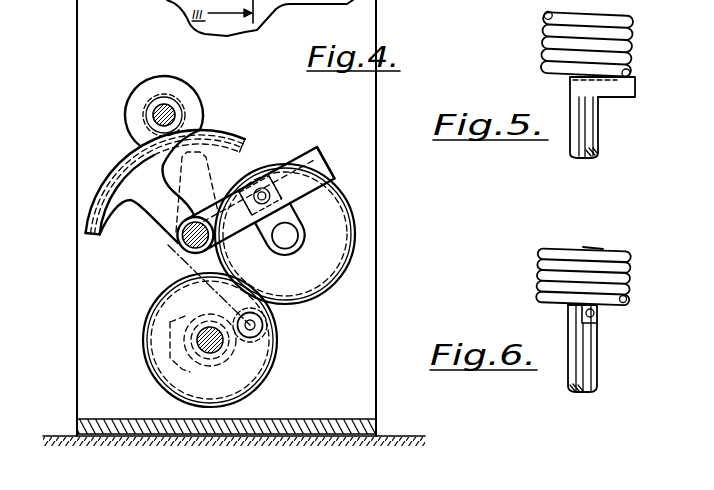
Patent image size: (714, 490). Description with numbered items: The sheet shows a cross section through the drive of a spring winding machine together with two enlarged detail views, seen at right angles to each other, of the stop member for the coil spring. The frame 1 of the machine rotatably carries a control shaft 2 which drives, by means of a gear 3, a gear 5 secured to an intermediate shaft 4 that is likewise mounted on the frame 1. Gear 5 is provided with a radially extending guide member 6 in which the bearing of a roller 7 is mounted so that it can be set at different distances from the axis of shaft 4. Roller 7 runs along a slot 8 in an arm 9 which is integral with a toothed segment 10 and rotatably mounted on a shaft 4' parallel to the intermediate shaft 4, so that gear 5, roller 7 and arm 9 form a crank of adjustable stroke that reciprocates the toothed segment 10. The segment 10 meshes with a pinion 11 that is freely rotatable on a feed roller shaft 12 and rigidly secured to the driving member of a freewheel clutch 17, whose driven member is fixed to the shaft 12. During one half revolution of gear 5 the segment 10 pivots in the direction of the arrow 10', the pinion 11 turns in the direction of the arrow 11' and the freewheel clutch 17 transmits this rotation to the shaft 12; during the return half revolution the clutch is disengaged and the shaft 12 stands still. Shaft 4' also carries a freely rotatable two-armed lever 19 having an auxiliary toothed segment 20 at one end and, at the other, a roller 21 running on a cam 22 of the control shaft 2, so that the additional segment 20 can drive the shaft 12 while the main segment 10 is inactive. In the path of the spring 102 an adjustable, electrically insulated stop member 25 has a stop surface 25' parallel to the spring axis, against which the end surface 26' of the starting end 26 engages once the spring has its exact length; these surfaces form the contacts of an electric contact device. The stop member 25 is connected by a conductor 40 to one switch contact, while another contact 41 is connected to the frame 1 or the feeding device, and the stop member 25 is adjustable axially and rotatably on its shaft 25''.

In FIG. 4, the frame 1 is at (82, 343).
In FIG. 4, the control shaft 2 is at (218, 349).
In FIG. 4, the gear 3 is at (267, 372).
In FIG. 4, the intermediate shaft 4 is at (299, 236).
In FIG. 4, the shaft 4' is at (177, 239).
In FIG. 4, the gear 5 is at (325, 284).
In FIG. 4, the guide member 6 is at (294, 212).
In FIG. 4, the roller 7 is at (263, 187).
In FIG. 4, the slot 8 is at (318, 164).
In FIG. 4, the arm 9 is at (316, 146).
In FIG. 4, the toothed segment 10 is at (141, 186).
In FIG. 4, the arrow 10' is at (74, 160).
In FIG. 4, the pinion 11 is at (183, 98).
In FIG. 4, the arrow 11' is at (162, 60).
In FIG. 4, the feed roller shaft 12 is at (178, 112).
In FIG. 4, the freewheel clutch 17 is at (128, 101).
In FIG. 4, the two-armed lever 19 is at (207, 168).
In FIG. 4, the auxiliary toothed segment 20 is at (228, 132).
In FIG. 4, the roller 21 is at (270, 338).
In FIG. 4, the cam 22 is at (175, 354).
In FIG. 4, the conductor 40 is at (303, 0).
In FIG. 4, the contact 41 is at (244, 14).
In FIG. 5, the spring 102 is at (540, 38).
In FIG. 6, the spring 102 is at (545, 264).
In FIG. 5, the stop member 25 is at (607, 106).
In FIG. 6, the stop member 25 is at (548, 321).
In FIG. 6, the stop surface 25' is at (567, 326).
In FIG. 5, the shaft 25'' is at (610, 117).
In FIG. 6, the shaft 25'' is at (604, 348).
In FIG. 6, the starting end 26 is at (625, 289).
In FIG. 5, the end surface 26' is at (643, 58).
In FIG. 6, the end surface 26' is at (549, 313).